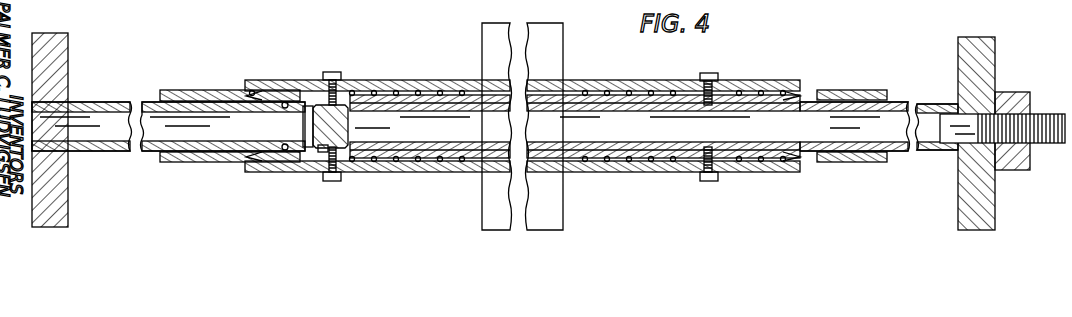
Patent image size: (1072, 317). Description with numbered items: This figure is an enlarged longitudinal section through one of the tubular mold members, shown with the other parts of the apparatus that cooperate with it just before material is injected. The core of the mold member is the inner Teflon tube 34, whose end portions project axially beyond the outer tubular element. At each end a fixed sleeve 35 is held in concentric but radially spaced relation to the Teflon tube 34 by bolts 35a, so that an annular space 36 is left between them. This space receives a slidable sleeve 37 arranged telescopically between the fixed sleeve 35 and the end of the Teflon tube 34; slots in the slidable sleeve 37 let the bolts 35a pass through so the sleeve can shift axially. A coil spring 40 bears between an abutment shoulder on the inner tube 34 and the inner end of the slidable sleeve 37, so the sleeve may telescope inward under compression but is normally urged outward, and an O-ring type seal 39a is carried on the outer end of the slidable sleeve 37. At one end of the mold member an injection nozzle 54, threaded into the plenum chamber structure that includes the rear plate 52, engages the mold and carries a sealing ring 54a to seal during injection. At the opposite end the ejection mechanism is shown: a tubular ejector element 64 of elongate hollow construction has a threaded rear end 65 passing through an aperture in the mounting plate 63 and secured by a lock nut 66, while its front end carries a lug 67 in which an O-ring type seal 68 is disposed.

The inner Teflon tube 34 is at (637, 156).
The fixed sleeve 35 is at (386, 166).
The bolts 35a is at (331, 72).
The annular space 36 is at (428, 88).
The slidable sleeve 37 is at (211, 77).
The O-ring type seal 39a is at (167, 163).
The coil spring 40 is at (450, 165).
The rear plate 52 is at (60, 59).
The injection nozzle 54 is at (116, 101).
The sealing ring 54a is at (284, 145).
The mounting plate 63 is at (985, 56).
The tubular ejector element 64 is at (935, 92).
The threaded rear end 65 is at (1043, 145).
The lock nut 66 is at (1010, 97).
The lug 67 is at (336, 127).
The O-ring type seal 68 is at (320, 152).